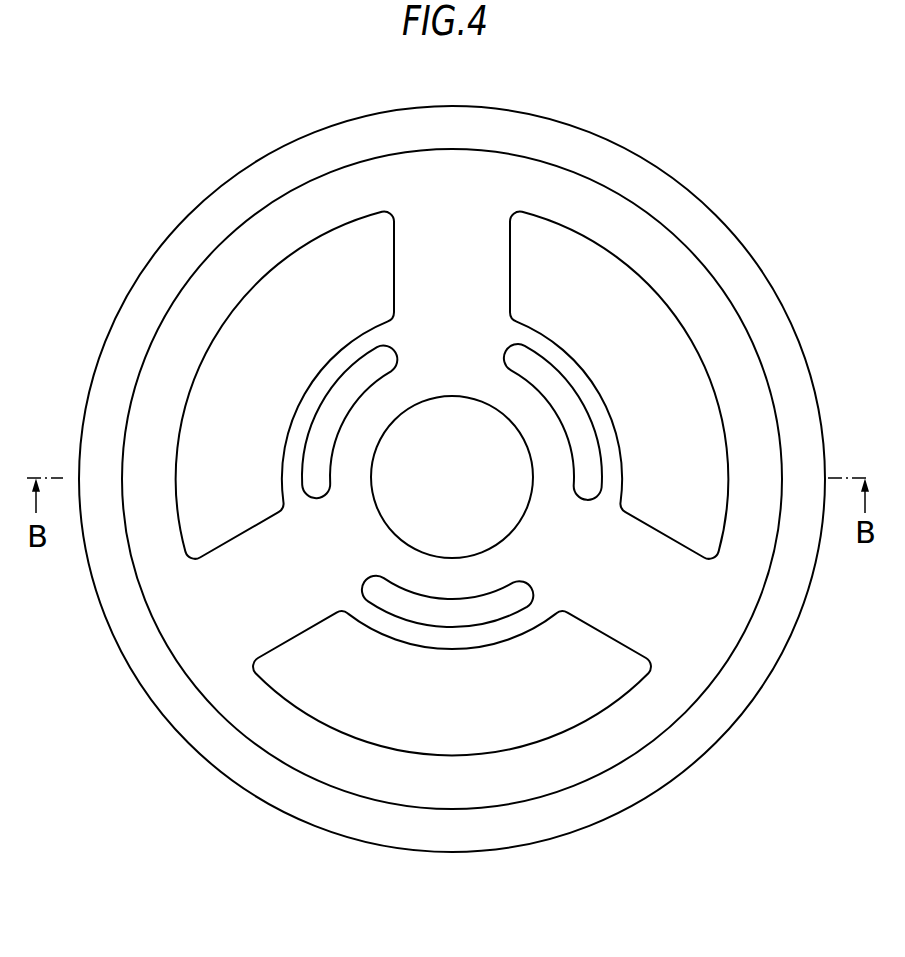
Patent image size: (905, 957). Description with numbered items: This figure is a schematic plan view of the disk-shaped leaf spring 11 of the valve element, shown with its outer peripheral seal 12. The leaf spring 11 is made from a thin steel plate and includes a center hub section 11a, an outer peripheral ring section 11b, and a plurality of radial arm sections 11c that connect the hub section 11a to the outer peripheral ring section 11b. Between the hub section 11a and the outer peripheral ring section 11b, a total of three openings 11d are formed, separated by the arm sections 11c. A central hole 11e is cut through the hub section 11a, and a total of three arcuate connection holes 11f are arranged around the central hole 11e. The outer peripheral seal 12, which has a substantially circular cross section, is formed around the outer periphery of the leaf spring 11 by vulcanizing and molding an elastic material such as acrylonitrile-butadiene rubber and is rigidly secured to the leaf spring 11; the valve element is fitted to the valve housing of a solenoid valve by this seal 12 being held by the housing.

The disk-shaped leaf spring 11 is at (529, 753).
The center hub section 11a is at (475, 350).
The outer peripheral ring section 11b is at (696, 297).
The radial arm section 11c is at (493, 240).
The opening 11d is at (703, 408).
The central hole 11e is at (481, 530).
The arcuate connection hole 11f is at (595, 398).
The outer peripheral seal 12 is at (681, 740).